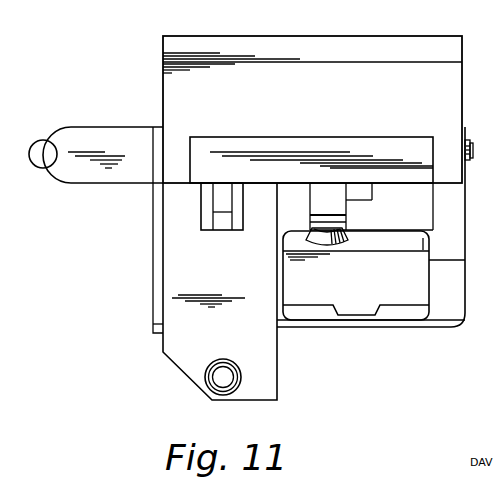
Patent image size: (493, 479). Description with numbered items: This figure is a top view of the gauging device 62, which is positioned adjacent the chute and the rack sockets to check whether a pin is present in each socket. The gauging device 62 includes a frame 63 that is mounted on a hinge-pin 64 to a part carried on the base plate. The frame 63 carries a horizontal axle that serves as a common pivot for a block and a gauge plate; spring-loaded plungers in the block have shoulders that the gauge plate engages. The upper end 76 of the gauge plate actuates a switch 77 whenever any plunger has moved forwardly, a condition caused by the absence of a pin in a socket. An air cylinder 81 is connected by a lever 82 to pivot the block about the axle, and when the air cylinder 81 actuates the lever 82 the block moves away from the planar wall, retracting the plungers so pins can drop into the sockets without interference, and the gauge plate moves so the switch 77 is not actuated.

The gauging device 62 is at (463, 277).
The frame 63 is at (94, 138).
The hinge-pin 64 is at (50, 168).
The upper end 76 is at (338, 224).
The switch 77 is at (389, 289).
The air cylinder 81 is at (184, 358).
The lever 82 is at (222, 206).